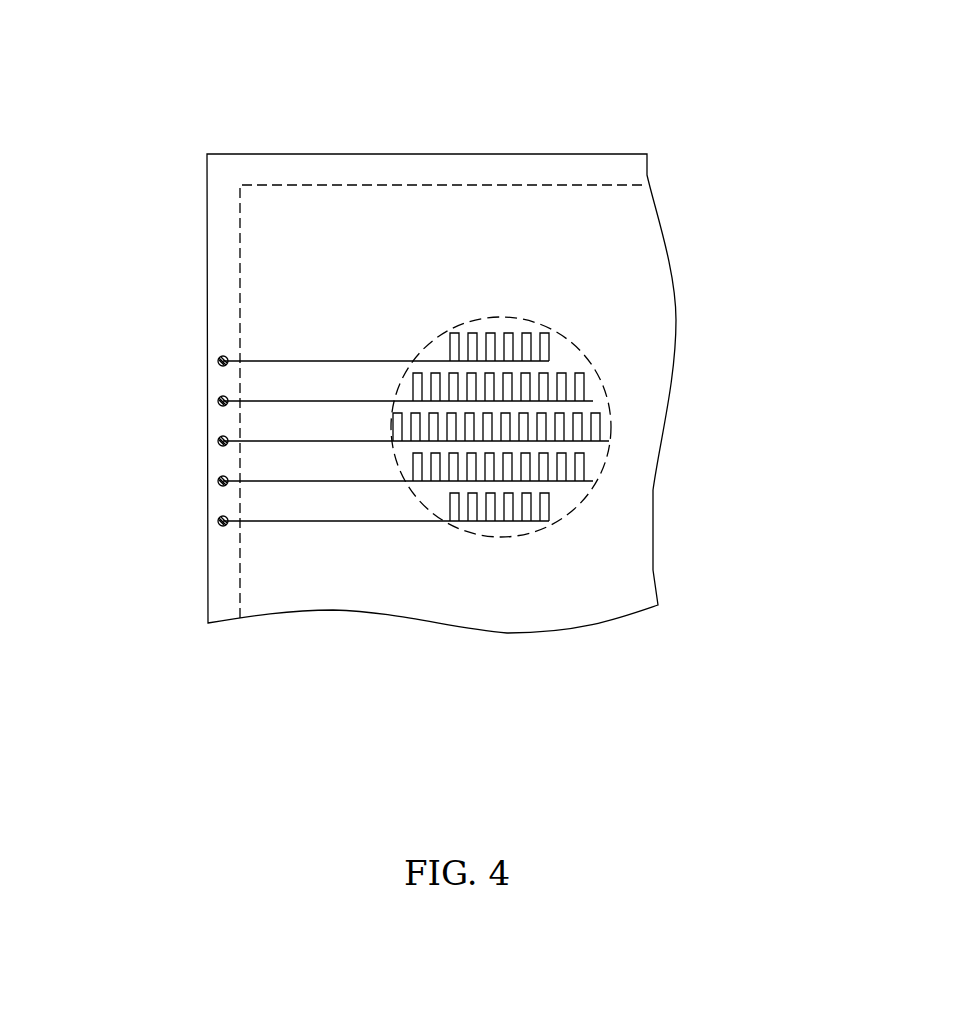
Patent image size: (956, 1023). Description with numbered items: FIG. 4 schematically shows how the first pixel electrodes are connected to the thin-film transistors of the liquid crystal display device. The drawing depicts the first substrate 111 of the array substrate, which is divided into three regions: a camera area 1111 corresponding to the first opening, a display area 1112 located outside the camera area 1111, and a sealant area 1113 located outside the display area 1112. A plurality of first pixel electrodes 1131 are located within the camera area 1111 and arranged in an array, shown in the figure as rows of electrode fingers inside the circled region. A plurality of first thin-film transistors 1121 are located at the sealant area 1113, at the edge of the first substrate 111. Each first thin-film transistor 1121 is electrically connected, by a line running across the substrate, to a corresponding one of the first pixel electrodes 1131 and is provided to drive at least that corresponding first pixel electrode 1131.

The first substrate 111 is at (305, 65).
The camera area 1111 is at (492, 317).
The display area 1112 is at (390, 247).
The sealant area 1113 is at (304, 176).
The first thin-film transistor 1121 is at (218, 441).
The first pixel electrode 1131 is at (452, 508).